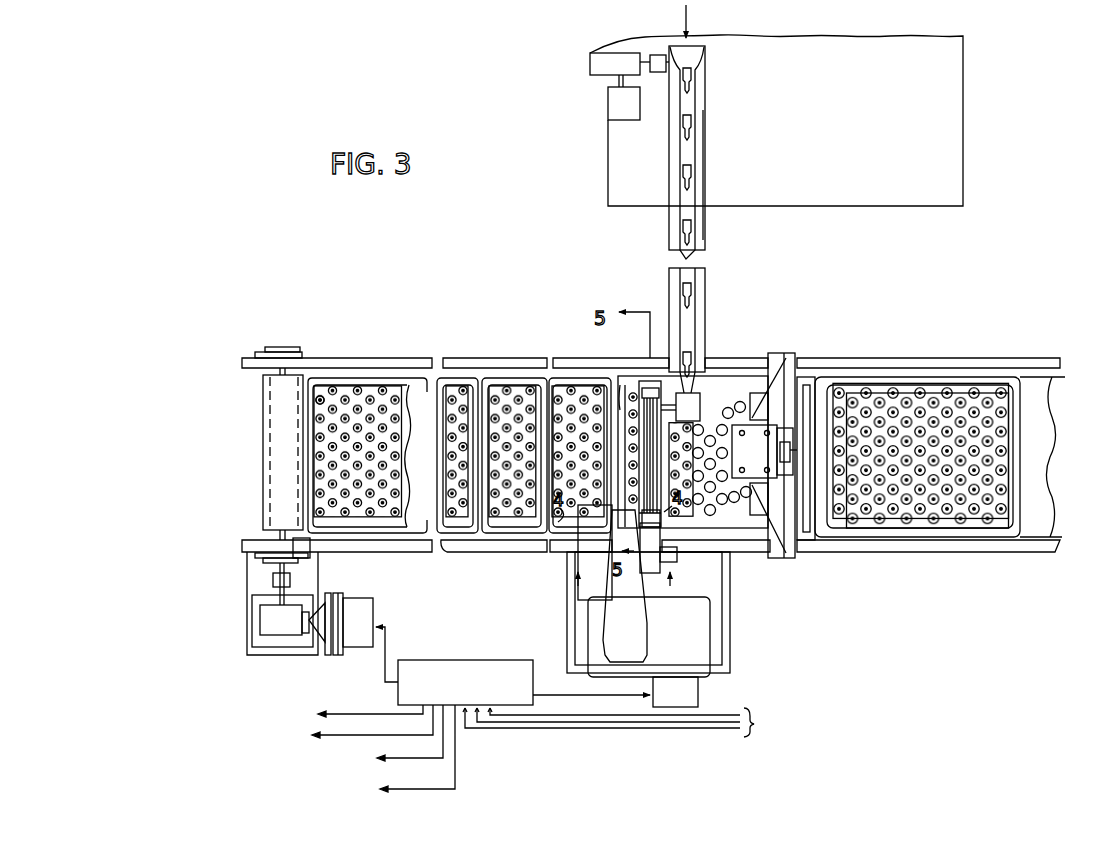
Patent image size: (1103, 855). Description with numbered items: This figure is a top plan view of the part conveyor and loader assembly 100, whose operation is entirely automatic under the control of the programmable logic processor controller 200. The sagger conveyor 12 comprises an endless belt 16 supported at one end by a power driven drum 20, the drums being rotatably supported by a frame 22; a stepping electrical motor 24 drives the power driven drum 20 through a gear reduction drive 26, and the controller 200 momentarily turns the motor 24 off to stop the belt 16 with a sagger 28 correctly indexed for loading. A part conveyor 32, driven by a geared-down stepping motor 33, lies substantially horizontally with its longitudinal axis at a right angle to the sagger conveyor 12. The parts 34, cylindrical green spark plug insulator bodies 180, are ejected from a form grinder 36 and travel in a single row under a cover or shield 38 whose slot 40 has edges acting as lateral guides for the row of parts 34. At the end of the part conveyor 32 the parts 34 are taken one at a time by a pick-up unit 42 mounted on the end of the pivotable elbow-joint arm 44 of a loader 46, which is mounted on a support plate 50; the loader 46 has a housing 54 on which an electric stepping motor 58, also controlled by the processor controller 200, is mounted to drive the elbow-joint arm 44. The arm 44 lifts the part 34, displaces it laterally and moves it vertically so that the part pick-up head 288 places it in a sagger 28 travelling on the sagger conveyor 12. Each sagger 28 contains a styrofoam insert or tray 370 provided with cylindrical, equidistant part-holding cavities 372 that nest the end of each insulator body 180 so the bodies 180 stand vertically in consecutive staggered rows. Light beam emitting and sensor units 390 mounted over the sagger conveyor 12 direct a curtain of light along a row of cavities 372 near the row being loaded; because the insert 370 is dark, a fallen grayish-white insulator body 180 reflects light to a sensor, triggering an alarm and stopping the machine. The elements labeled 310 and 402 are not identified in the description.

The sagger conveyor 12 is at (863, 358).
The endless belt 16 is at (292, 382).
The power driven drum 20 is at (270, 455).
The frame 22 is at (407, 358).
The stepping electrical motor 24 is at (362, 637).
The gear reduction drive 26 is at (290, 632).
The sagger 28 is at (518, 376).
The part conveyor 32 is at (666, 233).
The geared-down stepping motor 33 is at (623, 113).
The parts 34 is at (697, 172).
The form grinder 36 is at (967, 146).
The cover or shield 38 is at (700, 227).
The slot 40 is at (691, 203).
The pick-up unit 42 is at (630, 421).
The elbow-joint arm 44 is at (653, 578).
The loader 46 is at (651, 661).
The support plate 50 is at (718, 654).
The housing 54 is at (649, 647).
The electric stepping motor 58 is at (699, 695).
The part conveyor and loader assembly 100 is at (510, 303).
The spark plug insulator body 180 is at (690, 80).
The processor controller 200 is at (447, 658).
The part pick-up head 288 is at (707, 412).
The coupling 310 is at (302, 551).
The styrofoam insert or tray 370 is at (387, 395).
The part-holding cavities 372 is at (990, 385).
The light beam emitting and sensor unit 390 is at (776, 532).
The loose parts 402 is at (745, 500).